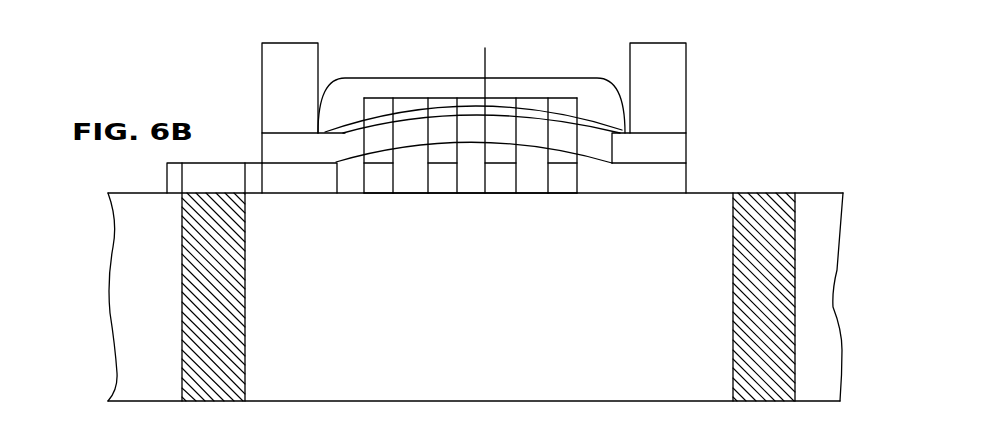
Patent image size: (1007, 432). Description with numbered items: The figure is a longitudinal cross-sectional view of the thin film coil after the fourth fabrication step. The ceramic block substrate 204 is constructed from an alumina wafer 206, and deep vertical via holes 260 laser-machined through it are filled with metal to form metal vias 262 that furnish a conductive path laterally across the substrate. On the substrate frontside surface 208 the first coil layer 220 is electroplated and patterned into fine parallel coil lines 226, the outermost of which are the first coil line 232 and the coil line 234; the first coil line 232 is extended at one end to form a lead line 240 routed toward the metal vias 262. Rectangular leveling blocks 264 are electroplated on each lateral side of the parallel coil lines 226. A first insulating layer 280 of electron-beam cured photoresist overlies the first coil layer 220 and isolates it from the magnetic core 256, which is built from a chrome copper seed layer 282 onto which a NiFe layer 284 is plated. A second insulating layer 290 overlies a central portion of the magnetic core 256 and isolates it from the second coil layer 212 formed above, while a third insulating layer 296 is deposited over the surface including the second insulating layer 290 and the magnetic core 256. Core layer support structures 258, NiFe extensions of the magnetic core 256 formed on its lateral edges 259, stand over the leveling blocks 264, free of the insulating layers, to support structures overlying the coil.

The ceramic block substrate 204 is at (514, 399).
The alumina wafer 206 is at (838, 352).
The substrate frontside surface 208 is at (833, 193).
The second coil layer 212 is at (373, 93).
The first coil layer 220 is at (688, 167).
The parallel coil lines 226 is at (450, 193).
The first coil line 232 is at (377, 193).
The outermost coil line 234 is at (563, 193).
The lead line 240 is at (265, 193).
The magnetic core 256 is at (539, 115).
The core layer support structures 258 is at (262, 61).
The lateral edges of the magnetic core 259 is at (262, 160).
The via holes 260 is at (200, 163).
The metal vias 262 is at (184, 291).
The leveling blocks 264 is at (292, 193).
The first insulating layer 280 is at (408, 193).
The seed layer 282 is at (688, 120).
The NiFe layer 284 is at (688, 90).
The second insulating layer 290 is at (411, 107).
The third insulating layer 296 is at (622, 92).